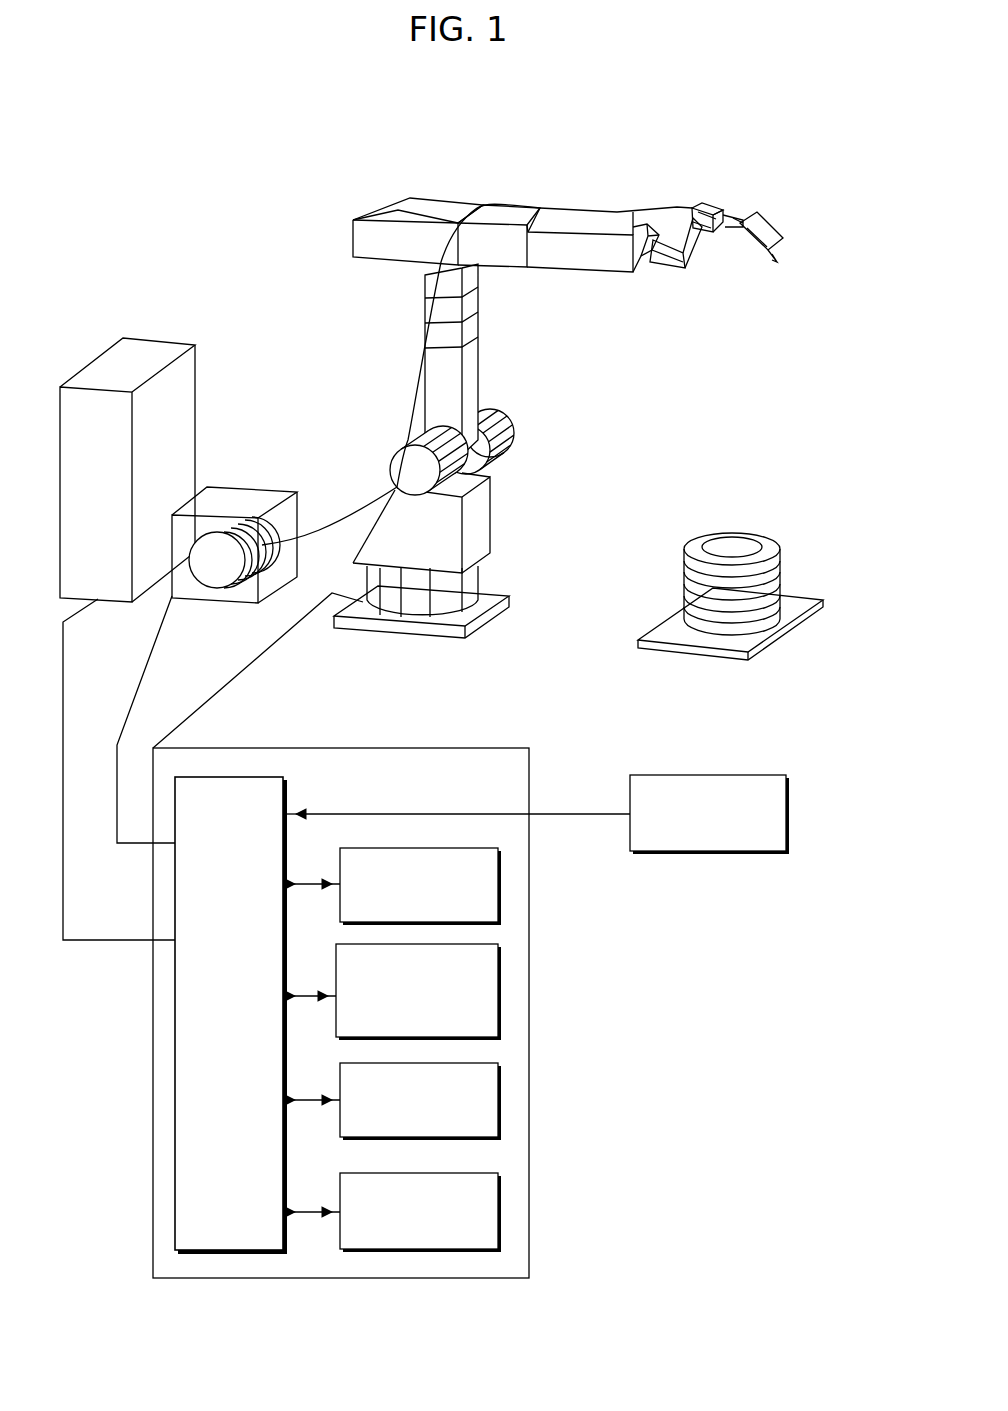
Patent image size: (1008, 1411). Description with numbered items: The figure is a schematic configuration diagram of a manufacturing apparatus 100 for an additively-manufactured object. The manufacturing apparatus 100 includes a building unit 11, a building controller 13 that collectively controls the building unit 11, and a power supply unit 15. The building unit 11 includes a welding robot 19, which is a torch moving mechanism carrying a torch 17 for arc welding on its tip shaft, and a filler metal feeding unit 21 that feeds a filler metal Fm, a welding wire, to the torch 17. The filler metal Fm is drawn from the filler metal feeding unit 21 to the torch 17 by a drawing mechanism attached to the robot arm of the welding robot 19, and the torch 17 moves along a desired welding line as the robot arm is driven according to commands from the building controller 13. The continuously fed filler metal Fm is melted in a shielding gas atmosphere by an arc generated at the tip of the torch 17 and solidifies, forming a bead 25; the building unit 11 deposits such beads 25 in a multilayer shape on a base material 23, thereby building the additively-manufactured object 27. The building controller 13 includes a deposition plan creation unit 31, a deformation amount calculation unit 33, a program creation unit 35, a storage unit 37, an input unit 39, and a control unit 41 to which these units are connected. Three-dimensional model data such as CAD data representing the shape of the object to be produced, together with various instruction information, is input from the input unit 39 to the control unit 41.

The manufacturing apparatus 100 is at (787, 158).
The building unit 11 is at (468, 417).
The building controller 13 is at (376, 977).
The power supply unit 15 is at (150, 348).
The torch 17 is at (776, 265).
The welding robot 19 is at (441, 228).
The filler metal feeding unit 21 is at (245, 492).
The base material 23 is at (672, 628).
The bead 25 is at (775, 572).
The additively-manufactured object 27 is at (734, 547).
The deposition plan creation unit 31 is at (502, 884).
The deformation amount calculation unit 33 is at (502, 990).
The program creation unit 35 is at (502, 1094).
The storage unit 37 is at (502, 1212).
The input unit 39 is at (710, 775).
The control unit 41 is at (289, 790).
The filler metal Fm is at (643, 212).